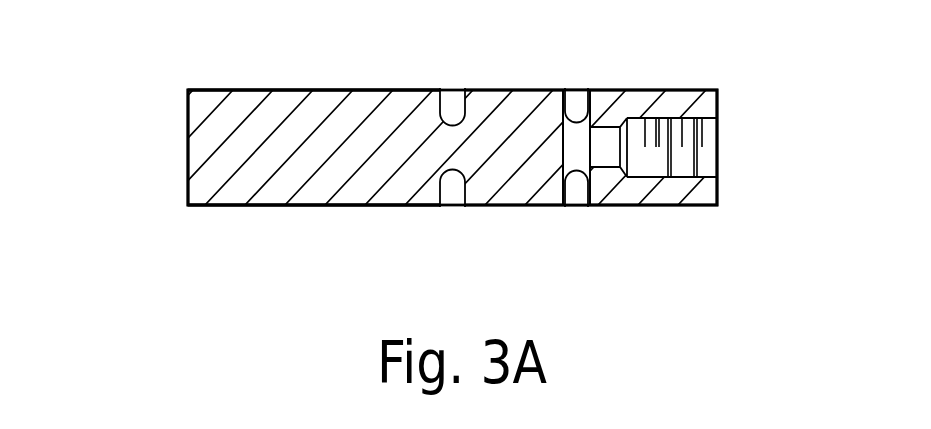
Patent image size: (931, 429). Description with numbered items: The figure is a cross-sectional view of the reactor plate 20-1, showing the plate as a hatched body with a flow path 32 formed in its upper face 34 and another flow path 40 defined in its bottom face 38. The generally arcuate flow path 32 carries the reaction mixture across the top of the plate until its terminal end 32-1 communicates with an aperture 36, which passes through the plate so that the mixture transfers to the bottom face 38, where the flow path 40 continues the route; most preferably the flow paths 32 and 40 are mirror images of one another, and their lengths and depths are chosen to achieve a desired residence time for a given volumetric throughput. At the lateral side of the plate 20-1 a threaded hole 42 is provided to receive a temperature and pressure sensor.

The reactor plate 20-1 is at (160, 206).
The upper face 34 is at (254, 90).
The bottom face 38 is at (247, 203).
The flow path 32 is at (448, 93).
The flow path 40 is at (455, 196).
The terminal end 32-1 is at (575, 98).
The aperture 36 is at (582, 148).
The threaded hole 42 is at (695, 160).